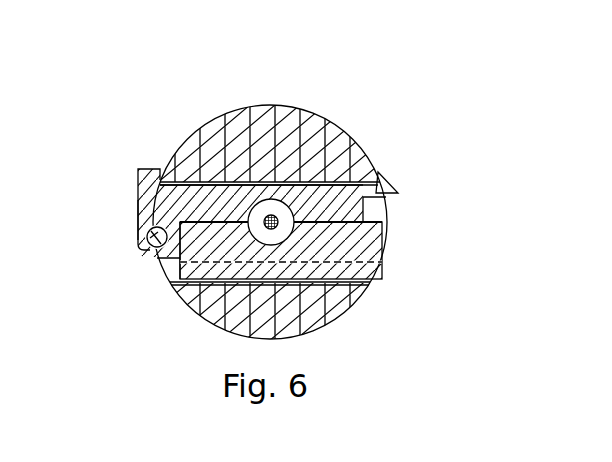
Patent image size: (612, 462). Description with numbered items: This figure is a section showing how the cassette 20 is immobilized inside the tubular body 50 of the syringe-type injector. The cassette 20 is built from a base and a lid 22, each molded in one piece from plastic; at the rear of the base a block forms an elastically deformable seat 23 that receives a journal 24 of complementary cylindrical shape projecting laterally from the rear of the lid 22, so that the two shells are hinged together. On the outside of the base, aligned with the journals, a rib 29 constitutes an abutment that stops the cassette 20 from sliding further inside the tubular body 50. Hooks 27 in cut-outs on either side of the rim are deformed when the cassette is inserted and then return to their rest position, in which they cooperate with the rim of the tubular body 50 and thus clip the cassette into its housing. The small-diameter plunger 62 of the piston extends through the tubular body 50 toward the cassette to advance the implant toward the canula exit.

The tubular body 50 is at (288, 105).
The cassette 20 is at (138, 200).
The rib 29 is at (150, 168).
The elastically deformable seat 23 is at (138, 214).
The hooks 27 is at (395, 192).
The lid 22 is at (366, 243).
The plunger 62 is at (243, 243).
The journal 24 is at (150, 252).